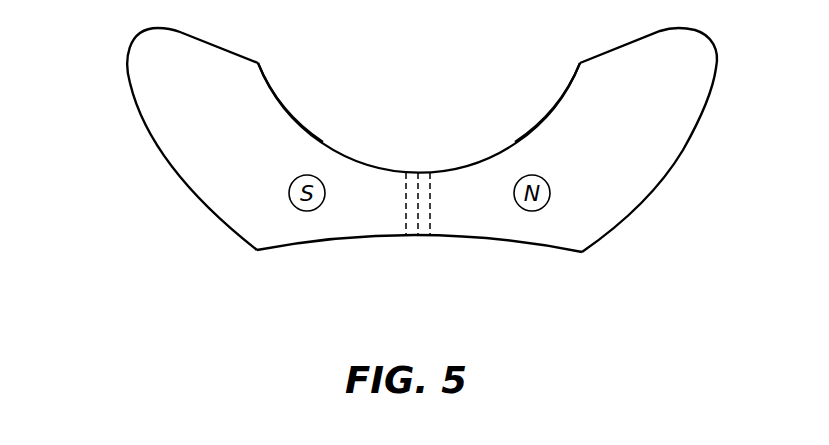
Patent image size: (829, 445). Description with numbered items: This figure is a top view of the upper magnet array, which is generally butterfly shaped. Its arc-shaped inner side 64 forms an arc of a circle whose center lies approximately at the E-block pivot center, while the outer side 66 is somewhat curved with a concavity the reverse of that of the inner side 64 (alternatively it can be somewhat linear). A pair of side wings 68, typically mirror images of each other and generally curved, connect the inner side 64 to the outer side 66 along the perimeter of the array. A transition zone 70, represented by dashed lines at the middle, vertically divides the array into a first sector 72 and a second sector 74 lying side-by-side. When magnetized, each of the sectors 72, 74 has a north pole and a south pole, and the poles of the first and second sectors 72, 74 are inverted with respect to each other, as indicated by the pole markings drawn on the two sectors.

The inner side 64 is at (323, 142).
The outer side 66 is at (502, 242).
The side wings 68 is at (130, 83).
The transition zone 70 is at (418, 173).
The first sector 72 is at (258, 120).
The second sector 74 is at (568, 135).